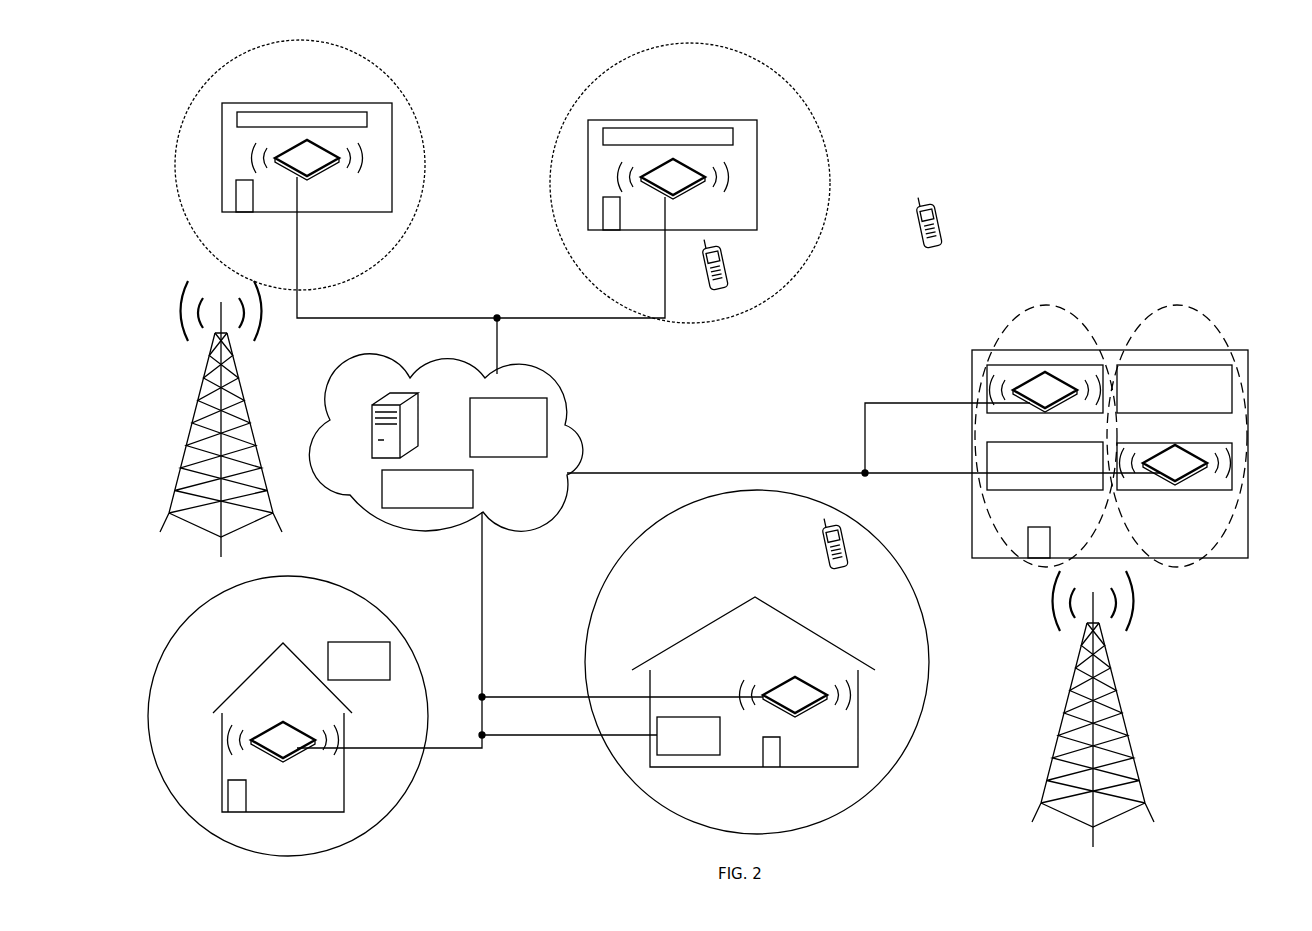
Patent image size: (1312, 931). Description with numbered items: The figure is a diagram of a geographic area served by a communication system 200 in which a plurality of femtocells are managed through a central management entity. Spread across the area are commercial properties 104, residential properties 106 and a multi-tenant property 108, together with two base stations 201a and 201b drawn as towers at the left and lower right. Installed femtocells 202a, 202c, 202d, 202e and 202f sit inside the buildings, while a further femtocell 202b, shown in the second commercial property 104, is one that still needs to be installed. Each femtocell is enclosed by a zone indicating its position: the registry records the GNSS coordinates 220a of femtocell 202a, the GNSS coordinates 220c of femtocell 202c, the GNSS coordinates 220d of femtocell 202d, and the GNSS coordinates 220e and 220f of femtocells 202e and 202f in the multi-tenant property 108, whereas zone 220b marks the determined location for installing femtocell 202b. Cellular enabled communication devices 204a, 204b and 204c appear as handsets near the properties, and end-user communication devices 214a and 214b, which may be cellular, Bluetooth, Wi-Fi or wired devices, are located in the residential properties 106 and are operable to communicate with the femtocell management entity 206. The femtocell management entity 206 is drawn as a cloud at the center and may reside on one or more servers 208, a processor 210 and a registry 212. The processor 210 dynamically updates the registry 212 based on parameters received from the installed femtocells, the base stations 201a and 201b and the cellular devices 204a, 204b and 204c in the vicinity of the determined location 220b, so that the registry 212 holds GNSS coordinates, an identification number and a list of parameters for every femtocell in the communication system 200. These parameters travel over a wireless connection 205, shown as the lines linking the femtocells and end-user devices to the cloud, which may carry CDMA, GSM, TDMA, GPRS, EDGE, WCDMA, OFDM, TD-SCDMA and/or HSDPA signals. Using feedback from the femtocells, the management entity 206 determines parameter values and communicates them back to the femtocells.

The communication system 200 is at (1143, 152).
The commercial property 104 is at (251, 103).
The residential property 106 is at (258, 670).
The multi-tenant property 108 is at (1249, 384).
The base station 201a is at (1114, 706).
The base station 201b is at (240, 398).
The installed femtocell 202a is at (306, 178).
The femtocell that needs to be installed 202b is at (678, 196).
The installed femtocell 202c is at (290, 760).
The installed femtocell 202d is at (805, 717).
The installed femtocell 202e is at (1056, 407).
The installed femtocell 202f is at (1189, 484).
The cellular enabled communication device 204a is at (922, 252).
The cellular enabled communication device 204b is at (708, 292).
The cellular enabled communication device 204c is at (828, 572).
The wireless connection 205 is at (494, 356).
The femtocell management entity 206 is at (536, 375).
The server 208 is at (420, 405).
The processor 210 is at (474, 490).
The registry 212 is at (548, 432).
The end-user communication device 214a is at (722, 737).
The end-user communication device 214b is at (358, 642).
The GNSS coordinates 220a is at (405, 94).
The determined location 220b is at (797, 88).
The GNSS coordinates 220c is at (315, 580).
The GNSS coordinates 220d is at (932, 638).
The GNSS coordinates 220e is at (1050, 568).
The GNSS coordinates 220f is at (1189, 568).